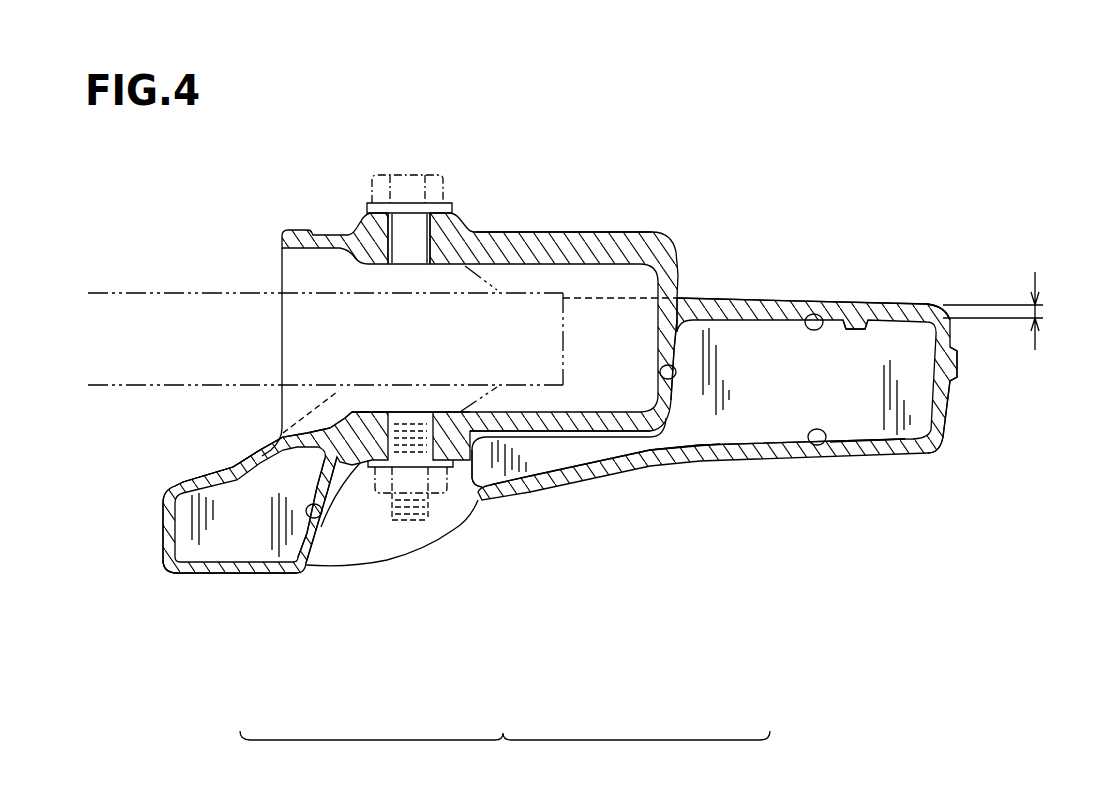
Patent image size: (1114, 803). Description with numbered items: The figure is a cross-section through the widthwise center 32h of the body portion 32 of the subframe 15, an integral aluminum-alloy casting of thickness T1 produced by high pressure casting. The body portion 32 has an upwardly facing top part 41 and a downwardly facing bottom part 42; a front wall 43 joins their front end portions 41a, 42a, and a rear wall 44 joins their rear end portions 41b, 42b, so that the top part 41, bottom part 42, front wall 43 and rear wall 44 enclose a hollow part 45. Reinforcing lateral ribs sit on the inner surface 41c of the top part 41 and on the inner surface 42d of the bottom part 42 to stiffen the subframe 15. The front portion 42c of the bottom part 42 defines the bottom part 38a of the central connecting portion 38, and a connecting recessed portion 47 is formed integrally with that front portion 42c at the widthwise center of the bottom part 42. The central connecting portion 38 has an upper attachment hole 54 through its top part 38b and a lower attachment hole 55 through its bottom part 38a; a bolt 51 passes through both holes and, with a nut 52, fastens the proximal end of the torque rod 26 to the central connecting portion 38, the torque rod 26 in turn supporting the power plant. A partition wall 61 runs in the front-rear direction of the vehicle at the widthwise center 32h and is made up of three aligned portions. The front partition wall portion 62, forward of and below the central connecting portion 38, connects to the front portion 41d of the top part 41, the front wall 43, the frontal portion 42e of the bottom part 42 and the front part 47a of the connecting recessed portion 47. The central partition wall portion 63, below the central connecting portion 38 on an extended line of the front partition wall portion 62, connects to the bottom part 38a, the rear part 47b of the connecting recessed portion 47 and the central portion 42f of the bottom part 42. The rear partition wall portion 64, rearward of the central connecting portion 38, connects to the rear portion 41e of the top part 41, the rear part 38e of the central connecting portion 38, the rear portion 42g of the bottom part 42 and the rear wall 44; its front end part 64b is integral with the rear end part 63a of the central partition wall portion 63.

The subframe 15 is at (854, 99).
The torque rod 26 is at (133, 292).
The body portion 32 is at (890, 210).
The widthwise center 32h is at (702, 307).
The central connecting portion 38 is at (572, 218).
The bottom part 38a is at (460, 418).
The top part 38b is at (515, 232).
The rear part 38e is at (660, 372).
The top part 41 is at (773, 285).
The front end portion 41a is at (172, 488).
The rear end portion 41b is at (930, 301).
The inner surface 41c is at (828, 314).
The front portion 41d is at (243, 468).
The rear portion 41e is at (893, 306).
The bottom part 42 is at (672, 478).
The front end portion 42a is at (175, 576).
The rear end portion 42b is at (937, 462).
The front portion 42c is at (350, 440).
The inner surface 42d is at (818, 446).
The frontal portion 42e is at (255, 566).
The central portion 42f is at (580, 468).
The rear portion 42g is at (877, 455).
The front wall 43 is at (160, 533).
The rear wall 44 is at (950, 403).
The hollow part 45 is at (812, 399).
The connecting recessed portion 47 is at (383, 467).
The front part 47a is at (306, 511).
The rear part 47b is at (458, 490).
The bolt 51 is at (413, 175).
The nut 52 is at (386, 522).
The upper attachment hole 54 is at (386, 238).
The lower attachment hole 55 is at (428, 396).
The partition wall 61 is at (505, 757).
The front partition wall portion 62 is at (235, 548).
The central partition wall portion 63 is at (548, 482).
The rear end part 63a is at (642, 440).
The rear partition wall portion 64 is at (765, 437).
The front end part 64b is at (690, 447).
The thickness T1 is at (1045, 312).